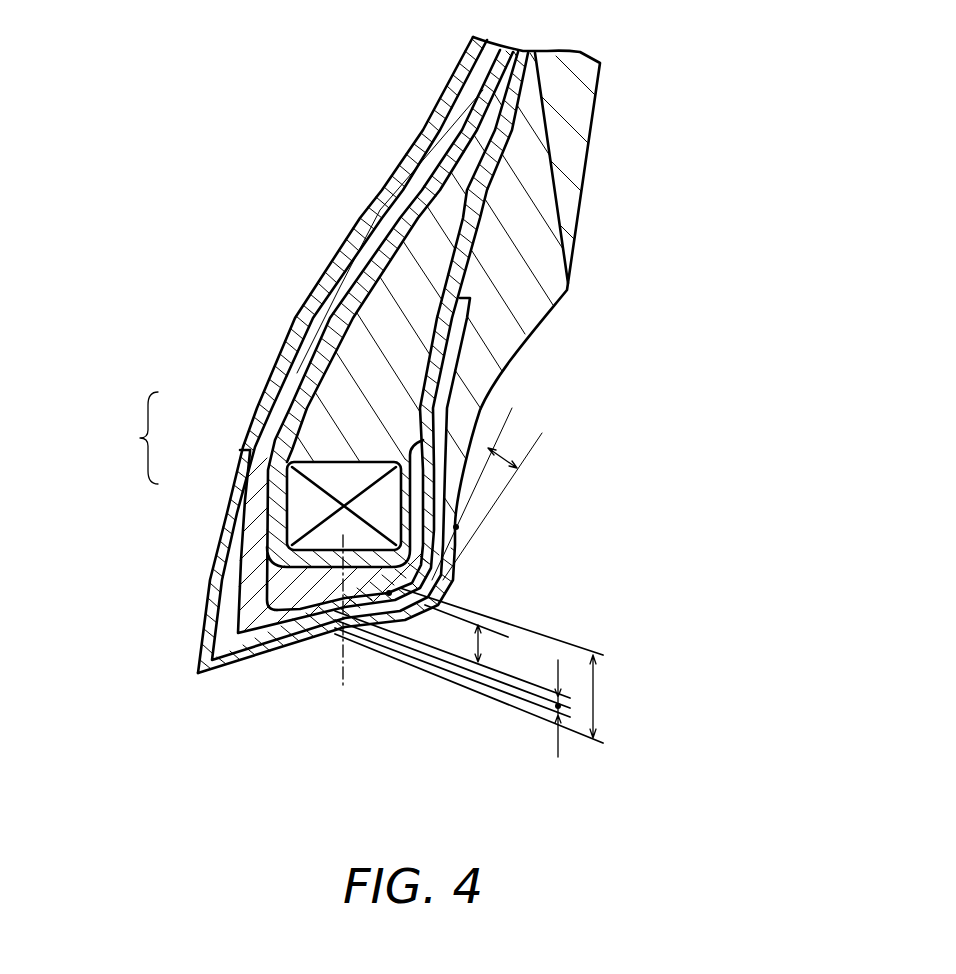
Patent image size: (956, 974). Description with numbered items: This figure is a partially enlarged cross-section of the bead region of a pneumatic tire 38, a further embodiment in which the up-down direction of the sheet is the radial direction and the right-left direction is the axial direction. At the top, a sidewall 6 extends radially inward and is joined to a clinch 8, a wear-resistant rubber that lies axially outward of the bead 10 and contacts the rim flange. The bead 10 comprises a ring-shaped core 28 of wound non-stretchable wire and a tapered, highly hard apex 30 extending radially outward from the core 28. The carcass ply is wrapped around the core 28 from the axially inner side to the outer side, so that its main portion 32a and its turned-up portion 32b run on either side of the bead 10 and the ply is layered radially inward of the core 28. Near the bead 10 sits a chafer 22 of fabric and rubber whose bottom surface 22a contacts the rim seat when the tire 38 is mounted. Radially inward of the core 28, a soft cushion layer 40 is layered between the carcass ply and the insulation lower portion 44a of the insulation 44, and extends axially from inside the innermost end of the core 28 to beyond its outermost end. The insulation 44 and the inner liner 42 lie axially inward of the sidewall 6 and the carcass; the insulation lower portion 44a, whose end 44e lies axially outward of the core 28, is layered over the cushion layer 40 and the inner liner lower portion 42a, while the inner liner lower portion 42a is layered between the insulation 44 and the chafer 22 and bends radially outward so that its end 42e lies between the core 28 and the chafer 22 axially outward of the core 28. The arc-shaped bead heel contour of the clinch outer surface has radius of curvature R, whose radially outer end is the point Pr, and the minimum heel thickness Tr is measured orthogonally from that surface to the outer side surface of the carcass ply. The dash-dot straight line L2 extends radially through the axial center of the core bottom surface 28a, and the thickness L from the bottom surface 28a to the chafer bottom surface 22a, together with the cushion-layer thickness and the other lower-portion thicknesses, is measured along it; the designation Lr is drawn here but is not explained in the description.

The bead portion 38 is at (90, 61).
The rim flange 6 is at (580, 97).
The rim 8 is at (523, 287).
The bead 10 is at (128, 438).
The carcass ply 22 is at (203, 657).
The end of carcass ply 22a is at (240, 667).
The bead core 28 is at (300, 466).
The bead core boundary 28a is at (240, 530).
The bead apex 30 is at (322, 418).
The sidewall inner layer 32a is at (478, 112).
The sidewall outer layer 32b is at (490, 153).
The reinforcing layer 40 is at (273, 580).
The outer chafer layer 42 is at (220, 627).
The lower end of outer chafer 42a is at (313, 630).
The upper end of outer chafer 42e is at (422, 512).
The inner chafer layer 44 is at (247, 600).
The lower end of inner chafer 44a is at (290, 620).
The upper end of inner chafer 44e is at (389, 593).
The bead core section R is at (358, 537).
The angle between tangent lines Tr is at (487, 494).
The reference point Pr is at (456, 527).
The length L is at (477, 665).
The reference point r Lr is at (558, 715).
The reference line L2 is at (343, 687).